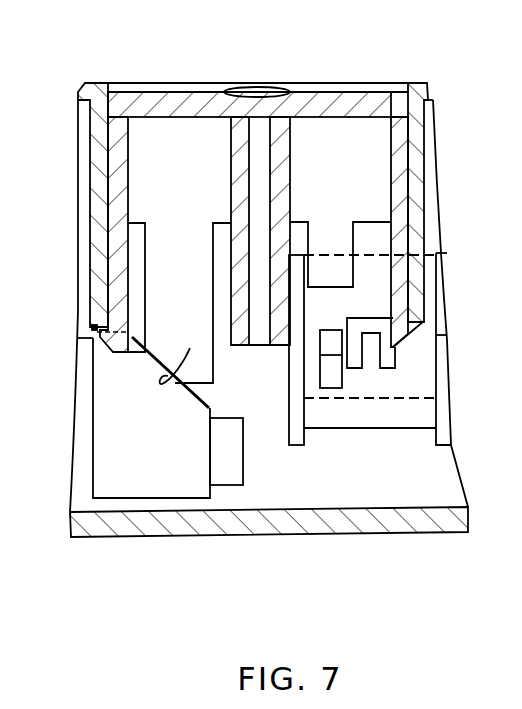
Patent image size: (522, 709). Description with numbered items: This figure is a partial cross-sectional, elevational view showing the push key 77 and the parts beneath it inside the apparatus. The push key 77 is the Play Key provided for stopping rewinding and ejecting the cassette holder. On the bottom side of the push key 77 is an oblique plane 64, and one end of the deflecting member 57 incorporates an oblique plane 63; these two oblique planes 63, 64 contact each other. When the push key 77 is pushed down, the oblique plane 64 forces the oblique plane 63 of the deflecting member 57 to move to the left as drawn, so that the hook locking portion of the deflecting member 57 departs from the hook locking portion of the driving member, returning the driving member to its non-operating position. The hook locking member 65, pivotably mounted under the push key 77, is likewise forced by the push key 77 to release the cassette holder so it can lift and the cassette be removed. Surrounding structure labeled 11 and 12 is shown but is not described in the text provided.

The housing 11 is at (75, 381).
The cover 12 is at (96, 83).
The deflecting member 57 is at (93, 467).
The oblique plane 63 is at (211, 403).
The oblique plane 64 is at (179, 350).
The hook locking member 65 is at (369, 421).
The push key 77 is at (196, 90).